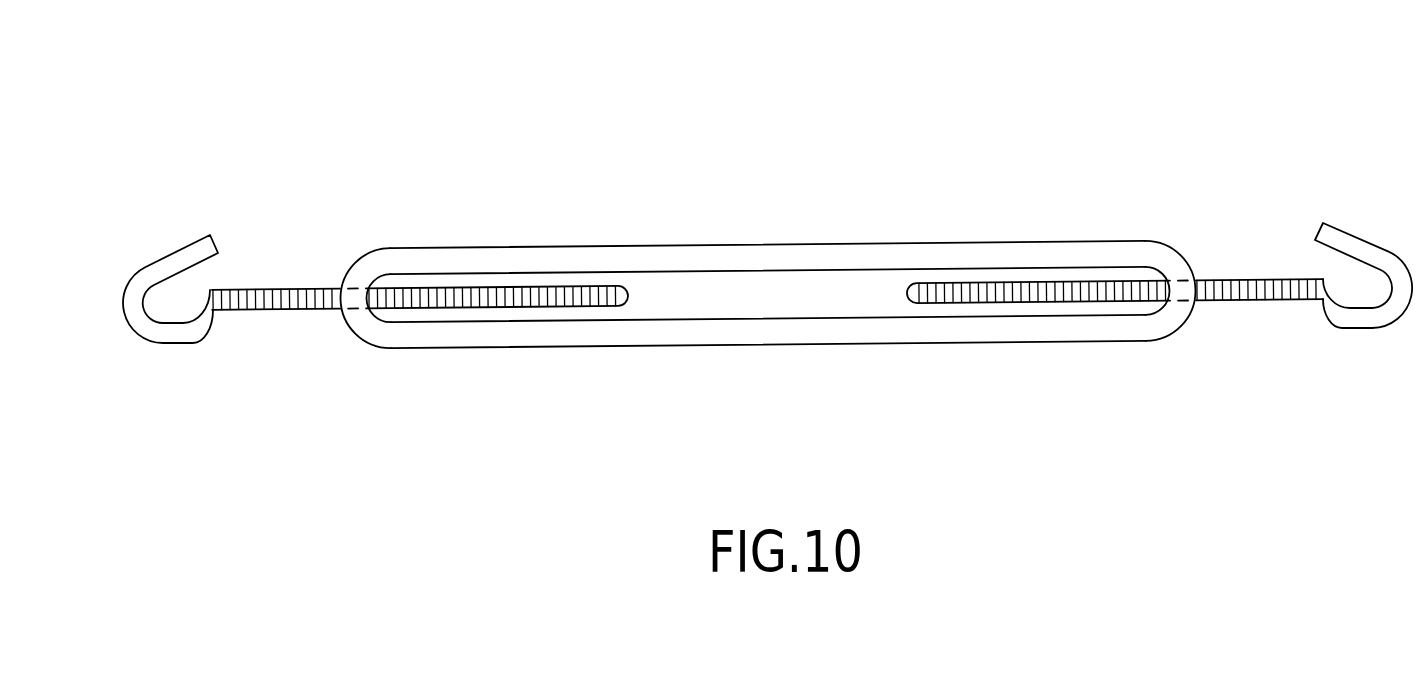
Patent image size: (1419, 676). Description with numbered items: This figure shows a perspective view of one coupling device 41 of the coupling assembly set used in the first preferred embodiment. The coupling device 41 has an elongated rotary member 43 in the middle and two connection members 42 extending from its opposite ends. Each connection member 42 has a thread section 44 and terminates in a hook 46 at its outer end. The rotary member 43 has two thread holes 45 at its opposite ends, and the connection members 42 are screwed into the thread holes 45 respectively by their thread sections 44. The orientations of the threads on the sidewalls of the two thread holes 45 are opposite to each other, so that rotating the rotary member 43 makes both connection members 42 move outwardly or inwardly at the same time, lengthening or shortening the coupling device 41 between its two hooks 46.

The coupling device 41 is at (582, 178).
The connection member 42 is at (200, 330).
The rotary member 43 is at (795, 255).
The thread section 44 is at (500, 298).
The thread hole 45 is at (345, 297).
The hook 46 is at (160, 265).